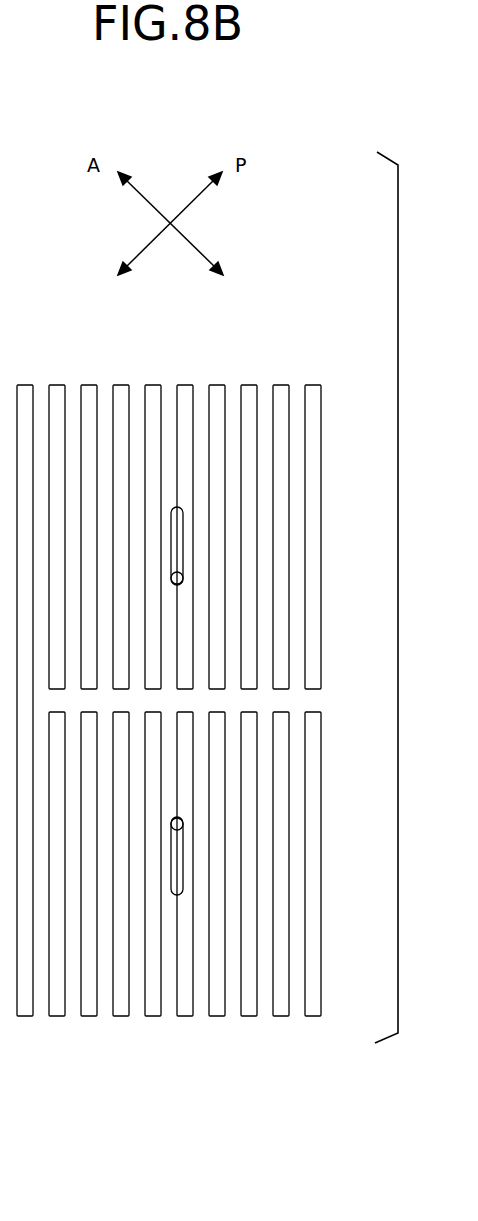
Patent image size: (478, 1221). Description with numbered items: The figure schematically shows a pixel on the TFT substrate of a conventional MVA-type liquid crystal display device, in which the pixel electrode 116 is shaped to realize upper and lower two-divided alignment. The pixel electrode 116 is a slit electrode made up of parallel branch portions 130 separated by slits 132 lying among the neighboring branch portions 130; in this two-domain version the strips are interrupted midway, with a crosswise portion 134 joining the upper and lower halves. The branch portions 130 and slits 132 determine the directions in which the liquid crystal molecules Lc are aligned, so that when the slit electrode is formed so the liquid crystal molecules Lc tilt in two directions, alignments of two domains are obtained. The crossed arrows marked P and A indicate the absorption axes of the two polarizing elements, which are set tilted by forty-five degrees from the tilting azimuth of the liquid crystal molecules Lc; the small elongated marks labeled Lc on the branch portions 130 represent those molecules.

The pixel electrode 116 is at (272, 345).
The branch portions 130 is at (282, 1010).
The slits 132 is at (263, 1010).
The connecting portion 134 is at (308, 697).
The liquid crystal molecules Lc is at (177, 553).